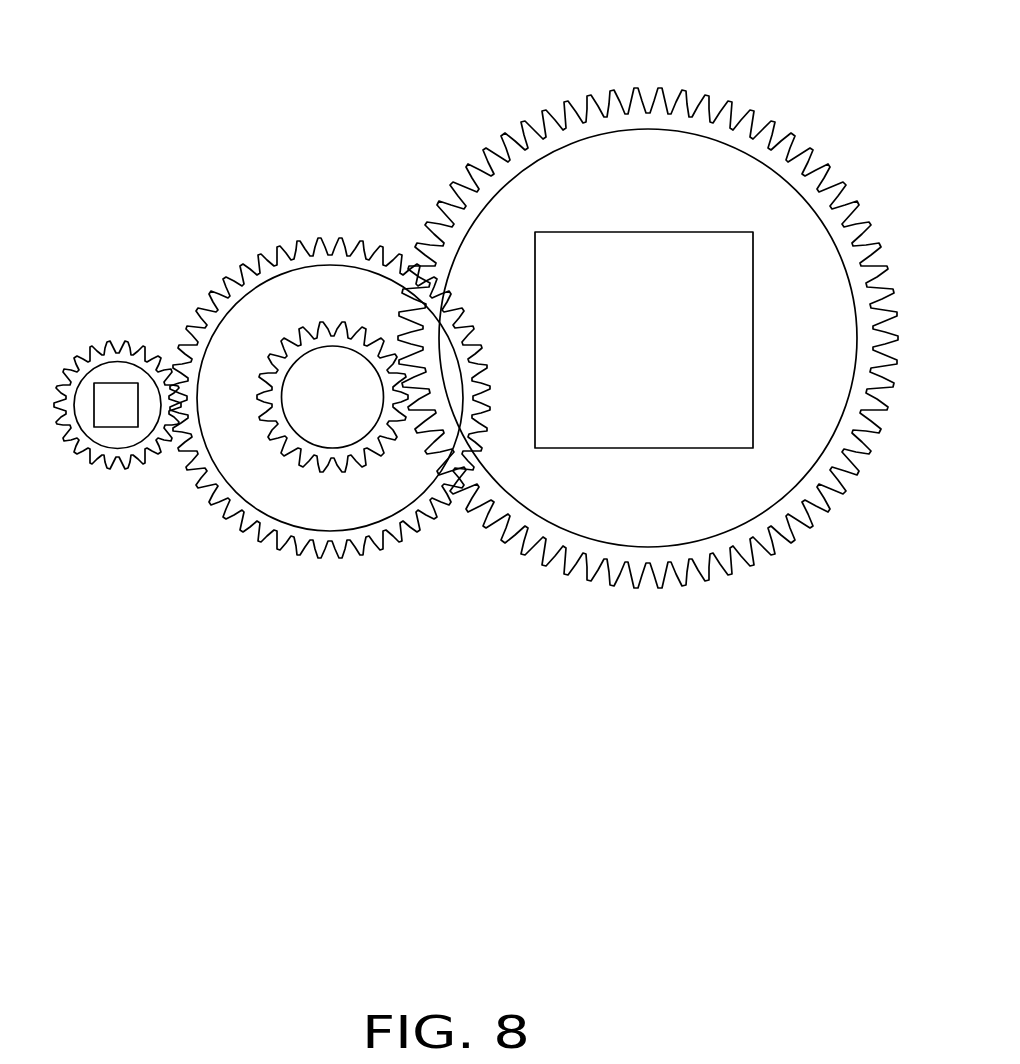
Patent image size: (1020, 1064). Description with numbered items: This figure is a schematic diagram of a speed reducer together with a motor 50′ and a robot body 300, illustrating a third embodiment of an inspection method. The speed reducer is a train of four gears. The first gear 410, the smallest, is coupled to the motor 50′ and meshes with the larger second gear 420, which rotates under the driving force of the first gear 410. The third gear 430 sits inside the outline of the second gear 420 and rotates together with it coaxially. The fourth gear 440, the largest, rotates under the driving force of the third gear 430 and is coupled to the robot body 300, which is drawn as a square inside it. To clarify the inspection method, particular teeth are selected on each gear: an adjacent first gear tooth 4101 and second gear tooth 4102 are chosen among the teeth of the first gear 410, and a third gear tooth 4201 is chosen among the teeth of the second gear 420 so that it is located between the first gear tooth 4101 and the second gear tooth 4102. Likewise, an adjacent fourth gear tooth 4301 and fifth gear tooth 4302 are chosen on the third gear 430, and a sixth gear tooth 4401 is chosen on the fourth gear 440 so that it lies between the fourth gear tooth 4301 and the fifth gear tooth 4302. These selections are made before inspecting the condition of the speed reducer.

The robot body 300 is at (642, 270).
The fourth gear 440 is at (648, 357).
The sixth gear tooth 4401 is at (412, 362).
The second gear 420 is at (330, 407).
The third gear tooth 4201 is at (205, 310).
The third gear 430 is at (332, 398).
The fourth gear tooth 4301 is at (396, 384).
The fifth gear tooth 4302 is at (394, 390).
The first gear 410 is at (117, 403).
The first gear tooth 4101 is at (153, 353).
The second gear tooth 4102 is at (155, 450).
The motor 50′ is at (117, 403).